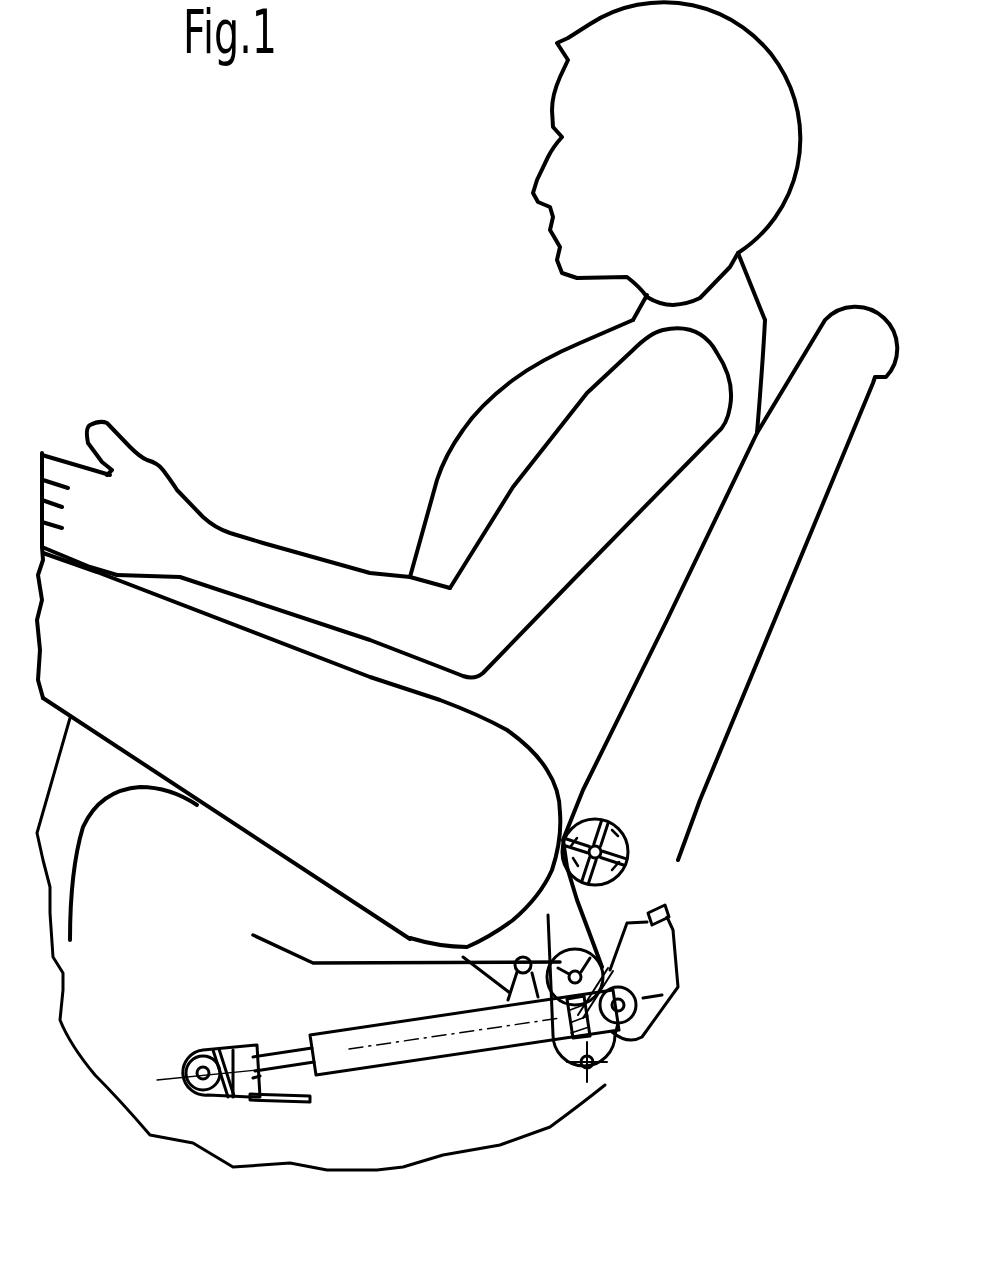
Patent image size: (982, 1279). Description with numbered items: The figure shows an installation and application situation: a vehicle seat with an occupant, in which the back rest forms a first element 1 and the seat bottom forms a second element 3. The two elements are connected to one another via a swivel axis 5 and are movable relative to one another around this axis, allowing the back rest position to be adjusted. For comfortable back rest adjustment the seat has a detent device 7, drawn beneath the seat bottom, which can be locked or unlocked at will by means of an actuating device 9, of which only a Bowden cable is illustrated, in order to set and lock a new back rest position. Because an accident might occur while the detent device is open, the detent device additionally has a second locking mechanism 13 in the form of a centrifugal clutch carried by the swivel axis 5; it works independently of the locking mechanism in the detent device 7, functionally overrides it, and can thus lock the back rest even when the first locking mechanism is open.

The first element 1 is at (748, 632).
The second element 3 is at (155, 855).
The swivel axis 5 is at (603, 853).
The detent device 7 is at (433, 1058).
The actuating device 9 is at (235, 1105).
The second locking mechanism 13 is at (630, 842).